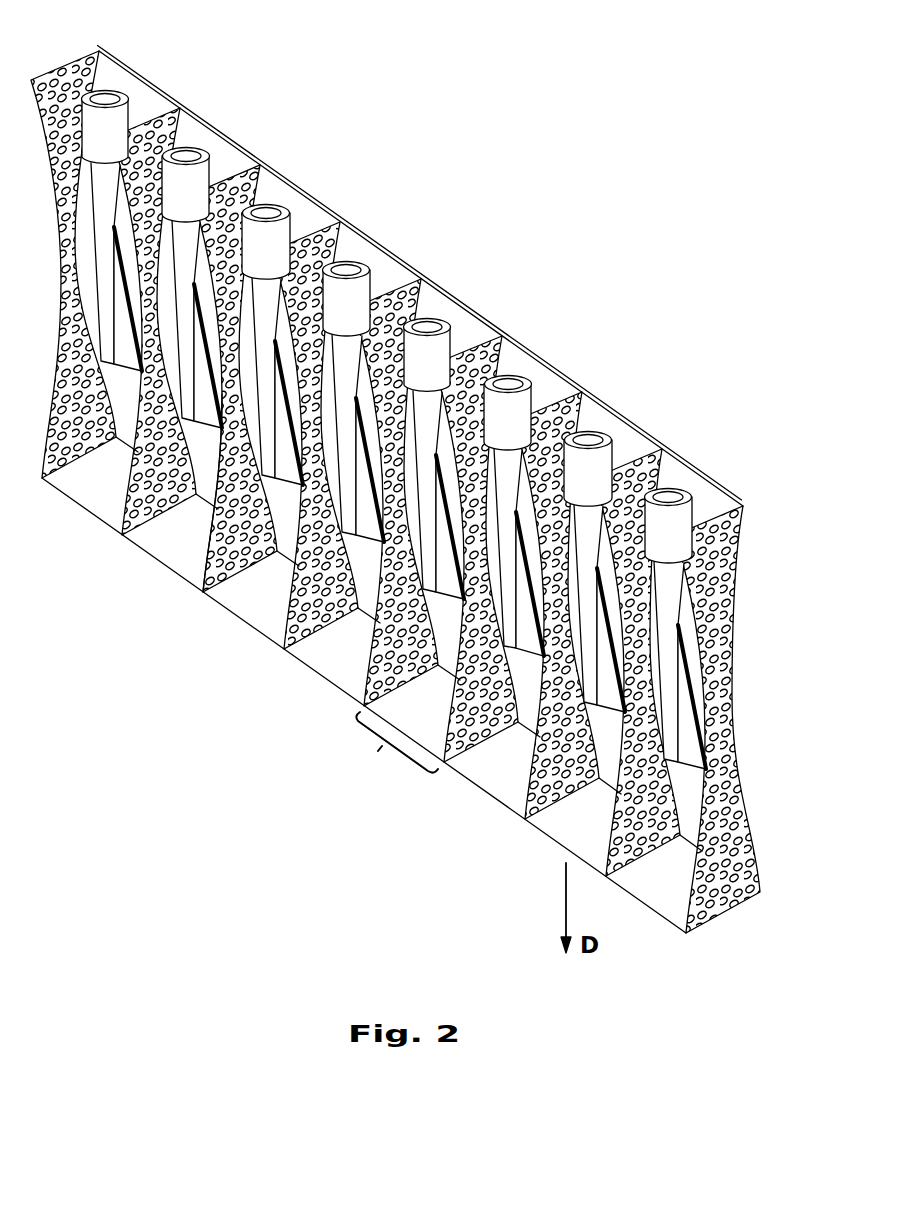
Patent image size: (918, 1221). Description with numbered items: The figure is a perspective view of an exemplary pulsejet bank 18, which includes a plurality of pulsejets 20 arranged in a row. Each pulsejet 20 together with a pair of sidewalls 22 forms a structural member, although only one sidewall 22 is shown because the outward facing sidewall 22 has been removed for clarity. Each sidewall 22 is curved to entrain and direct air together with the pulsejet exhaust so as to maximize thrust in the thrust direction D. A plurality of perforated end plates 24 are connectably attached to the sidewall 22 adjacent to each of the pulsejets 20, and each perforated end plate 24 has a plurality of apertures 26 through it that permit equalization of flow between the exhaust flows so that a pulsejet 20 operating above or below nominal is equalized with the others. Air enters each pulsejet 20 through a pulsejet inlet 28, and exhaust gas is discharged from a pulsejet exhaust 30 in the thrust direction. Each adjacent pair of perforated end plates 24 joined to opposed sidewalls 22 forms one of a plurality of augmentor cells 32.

The pulsejet bank 18 is at (371, 176).
The pulsejet 20 is at (447, 320).
The sidewall 22 is at (470, 333).
The perforated end plate 24 is at (213, 593).
The aperture 26 is at (215, 562).
The pulsejet inlet 28 is at (272, 212).
The pulsejet exhaust 30 is at (286, 648).
The augmentor cell 32 is at (397, 742).